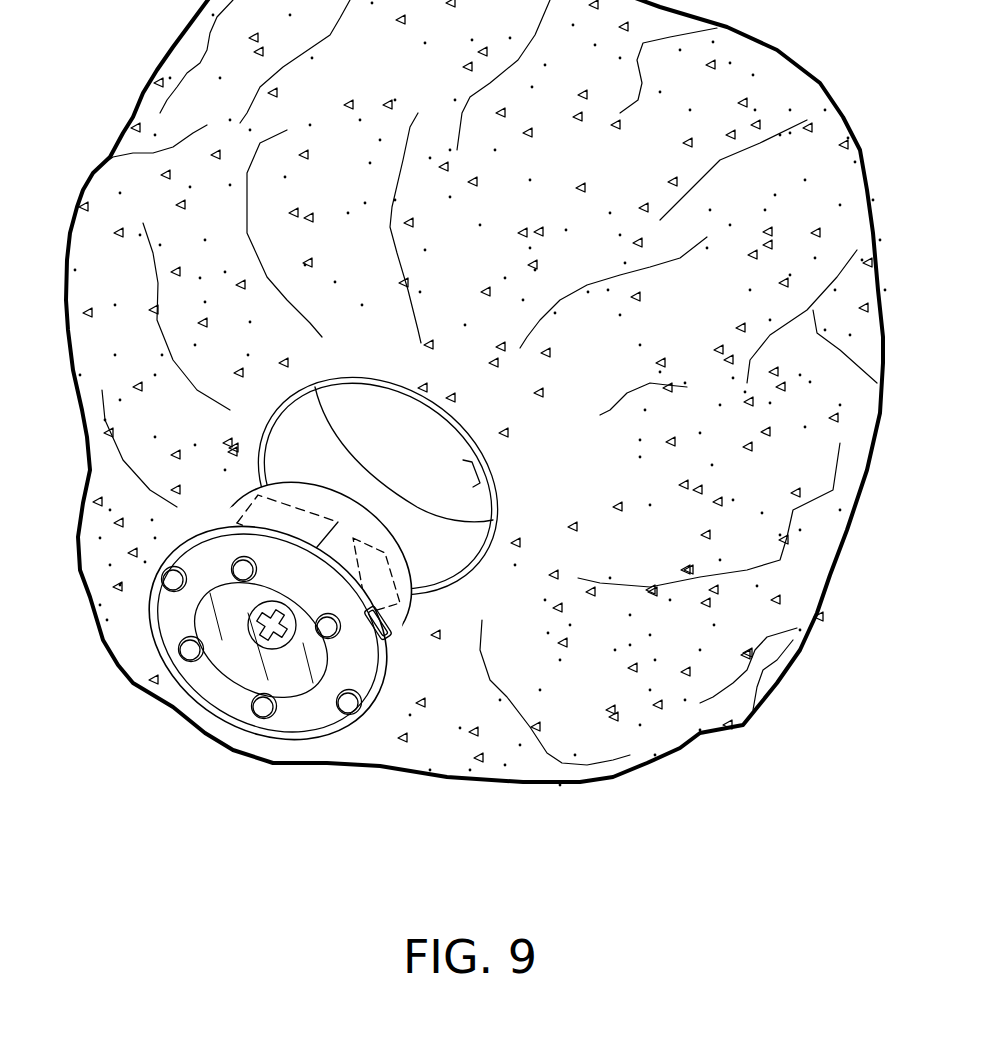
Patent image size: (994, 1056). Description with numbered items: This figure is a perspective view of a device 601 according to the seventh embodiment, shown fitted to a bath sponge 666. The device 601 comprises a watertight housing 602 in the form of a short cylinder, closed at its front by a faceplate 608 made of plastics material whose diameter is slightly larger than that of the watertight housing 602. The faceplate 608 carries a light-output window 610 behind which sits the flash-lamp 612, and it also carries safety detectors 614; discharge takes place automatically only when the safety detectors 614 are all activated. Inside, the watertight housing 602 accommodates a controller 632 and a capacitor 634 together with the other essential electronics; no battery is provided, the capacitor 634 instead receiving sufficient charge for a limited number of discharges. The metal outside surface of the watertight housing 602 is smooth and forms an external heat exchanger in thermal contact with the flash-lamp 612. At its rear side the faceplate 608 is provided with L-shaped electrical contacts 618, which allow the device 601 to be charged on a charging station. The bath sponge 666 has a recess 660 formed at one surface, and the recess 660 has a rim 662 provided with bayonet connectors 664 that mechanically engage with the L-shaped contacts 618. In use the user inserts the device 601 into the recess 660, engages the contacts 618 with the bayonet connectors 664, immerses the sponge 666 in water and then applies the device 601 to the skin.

The device 601 is at (277, 662).
The watertight housing 602 is at (400, 627).
The faceplate 608 is at (328, 737).
The light-output window 610 is at (300, 683).
The flash-lamp 612 is at (267, 637).
The safety detectors 614 is at (173, 582).
The L-shaped electrical contacts 618 is at (382, 567).
The controller 632 is at (287, 520).
The capacitor 634 is at (438, 597).
The recess 660 is at (470, 572).
The rim 662 is at (467, 568).
The bayonet connectors 664 is at (472, 478).
The bath sponge 666 is at (743, 725).